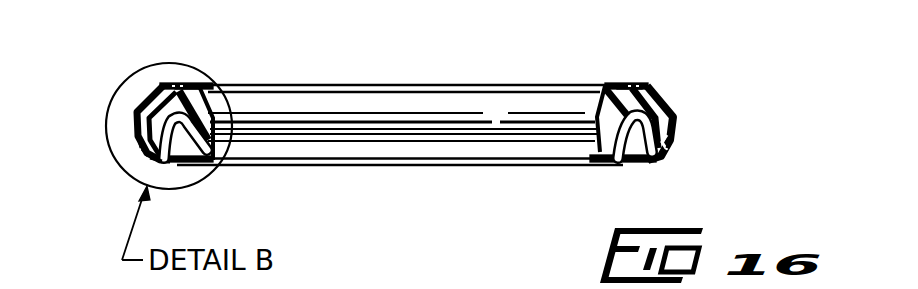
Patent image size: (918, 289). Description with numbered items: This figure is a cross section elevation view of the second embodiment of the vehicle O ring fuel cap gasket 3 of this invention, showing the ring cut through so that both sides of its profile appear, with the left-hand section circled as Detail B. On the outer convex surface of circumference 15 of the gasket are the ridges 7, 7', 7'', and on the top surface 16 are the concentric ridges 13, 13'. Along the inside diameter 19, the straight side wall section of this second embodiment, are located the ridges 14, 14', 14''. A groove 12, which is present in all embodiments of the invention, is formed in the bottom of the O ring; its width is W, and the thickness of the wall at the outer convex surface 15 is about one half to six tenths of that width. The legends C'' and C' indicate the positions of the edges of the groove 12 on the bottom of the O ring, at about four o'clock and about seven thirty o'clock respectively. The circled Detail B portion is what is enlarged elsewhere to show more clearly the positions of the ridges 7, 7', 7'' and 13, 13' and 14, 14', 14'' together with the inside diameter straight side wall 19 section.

The vehicle O ring fuel cap gasket 3 is at (672, 100).
The ridge on outer circumference 7 is at (392, 148).
The ridge on outer circumference 7' is at (396, 172).
The ridge on outer circumference 7'' is at (402, 192).
The groove 12 is at (192, 164).
The concentric ridge on top surface 13 is at (408, 66).
The concentric ridge on top surface 13' is at (406, 62).
The ridge on inner circumference 14 is at (401, 160).
The ridge on inner circumference 14' is at (405, 178).
The ridge on inner circumference 14'' is at (401, 191).
The outer convex surface of circumference 15 is at (137, 110).
The top surface 16 is at (173, 86).
The inside diameter straight side wall section 19 is at (318, 123).
The second groove edge C' is at (411, 182).
The first groove edge C'' is at (409, 176).